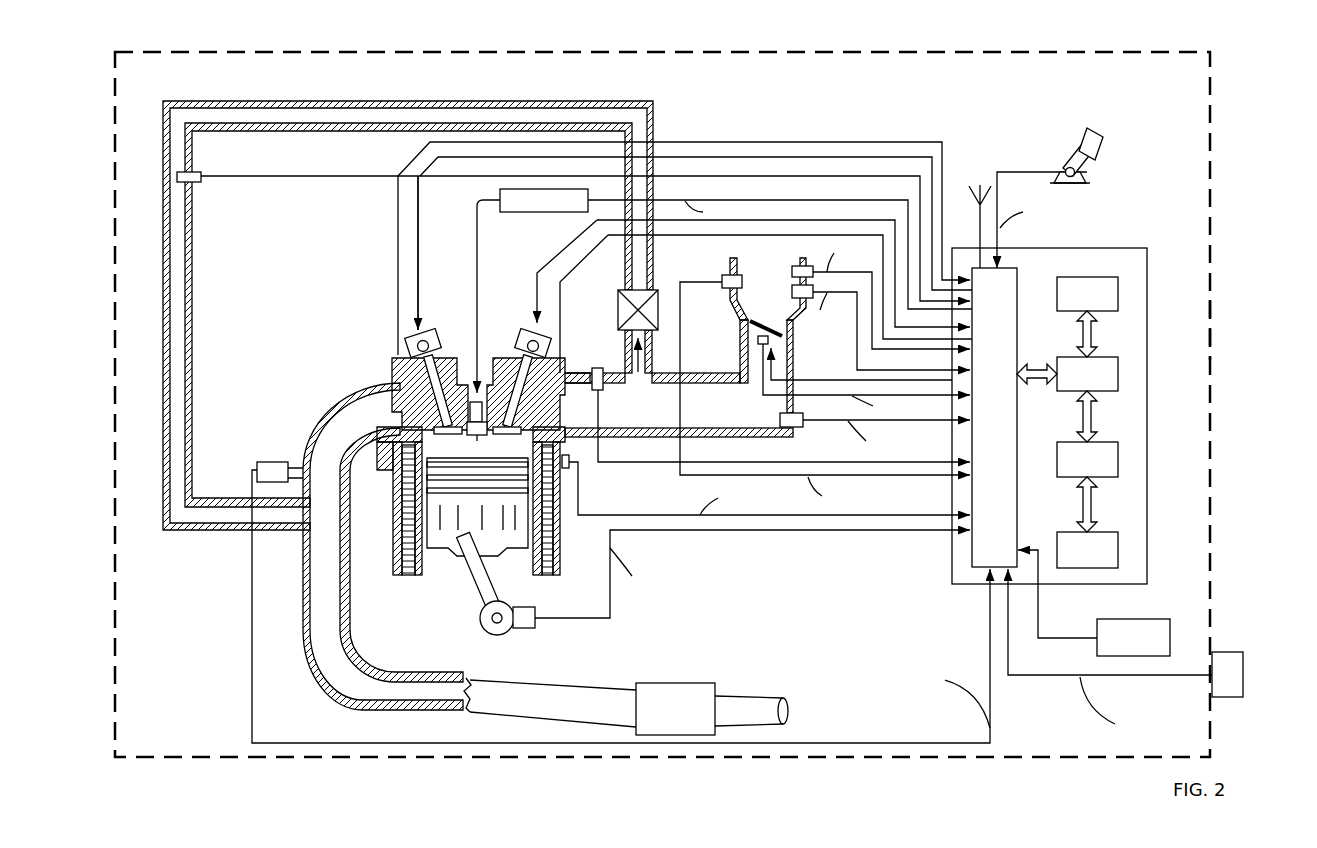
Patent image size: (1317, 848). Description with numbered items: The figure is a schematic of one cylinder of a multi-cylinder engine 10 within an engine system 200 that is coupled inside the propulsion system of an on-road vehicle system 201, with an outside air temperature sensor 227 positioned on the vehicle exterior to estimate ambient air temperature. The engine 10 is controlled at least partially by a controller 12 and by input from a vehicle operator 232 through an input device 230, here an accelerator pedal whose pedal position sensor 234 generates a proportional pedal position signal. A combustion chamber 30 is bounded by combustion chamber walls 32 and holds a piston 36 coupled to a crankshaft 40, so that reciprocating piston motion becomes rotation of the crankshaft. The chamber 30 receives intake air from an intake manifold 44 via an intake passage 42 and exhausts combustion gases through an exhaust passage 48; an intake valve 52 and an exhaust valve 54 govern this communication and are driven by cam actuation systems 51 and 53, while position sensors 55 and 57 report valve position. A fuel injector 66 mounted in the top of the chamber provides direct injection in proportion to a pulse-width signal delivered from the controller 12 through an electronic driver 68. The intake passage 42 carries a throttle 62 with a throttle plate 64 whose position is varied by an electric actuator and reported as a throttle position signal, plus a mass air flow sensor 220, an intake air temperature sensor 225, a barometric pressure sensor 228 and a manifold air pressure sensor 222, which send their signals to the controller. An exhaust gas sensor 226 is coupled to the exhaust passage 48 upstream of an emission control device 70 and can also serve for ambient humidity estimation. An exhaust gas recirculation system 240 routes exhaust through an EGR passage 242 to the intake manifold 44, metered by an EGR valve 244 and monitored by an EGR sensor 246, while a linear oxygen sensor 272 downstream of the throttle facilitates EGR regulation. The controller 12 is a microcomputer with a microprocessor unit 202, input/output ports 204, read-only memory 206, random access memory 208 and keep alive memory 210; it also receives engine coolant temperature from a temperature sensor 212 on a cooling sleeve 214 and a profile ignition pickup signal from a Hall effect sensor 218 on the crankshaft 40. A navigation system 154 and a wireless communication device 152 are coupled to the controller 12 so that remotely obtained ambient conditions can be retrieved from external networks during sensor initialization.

The engine 10 is at (330, 318).
The controller 12 is at (1147, 250).
The combustion chamber 30 is at (418, 500).
The combustion chamber walls 32 is at (428, 565).
The piston 36 is at (465, 530).
The crankshaft 40 is at (490, 632).
The intake passage 42 is at (766, 314).
The intake manifold 44 is at (679, 405).
The exhaust passage 48 is at (387, 547).
The cam actuation system 51 is at (528, 330).
The intake valve 52 is at (540, 413).
The cam actuation system 53 is at (428, 330).
The exhaust valve 54 is at (400, 393).
The position sensor 55 is at (565, 362).
The position sensor 57 is at (398, 345).
The throttle 62 is at (786, 327).
The throttle plate 64 is at (746, 322).
The fuel injector 66 is at (478, 398).
The electronic driver 68 is at (562, 212).
The emission control device 70 is at (629, 707).
The wireless communication device 152 is at (977, 235).
The navigation system 154 is at (1094, 603).
The engine system 200 is at (1234, 136).
The vehicle system 201 is at (1212, 330).
The microprocessor unit 202 is at (1118, 374).
The input/output ports 204 is at (1018, 275).
The read-only memory 206 is at (1118, 292).
The random access memory 208 is at (1118, 460).
The keep alive memory 210 is at (1118, 550).
The temperature sensor 212 is at (568, 470).
The cooling sleeve 214 is at (548, 525).
The Hall effect sensor 218 is at (528, 628).
The mass air flow sensor 220 is at (792, 270).
The manifold air pressure sensor 222 is at (800, 428).
The intake air temperature sensor 225 is at (792, 292).
The exhaust gas sensor 226 is at (257, 466).
The outside air temperature sensor 227 is at (1228, 652).
The barometric pressure sensor 228 is at (722, 280).
The input device 230 is at (1062, 150).
The vehicle operator 232 is at (1105, 139).
The pedal position sensor 234 is at (1090, 184).
The exhaust gas recirculation system 240 is at (531, 97).
The EGR passage 242 is at (400, 101).
The EGR valve 244 is at (618, 312).
The EGR sensor 246 is at (196, 182).
The linear oxygen sensor 272 is at (601, 389).